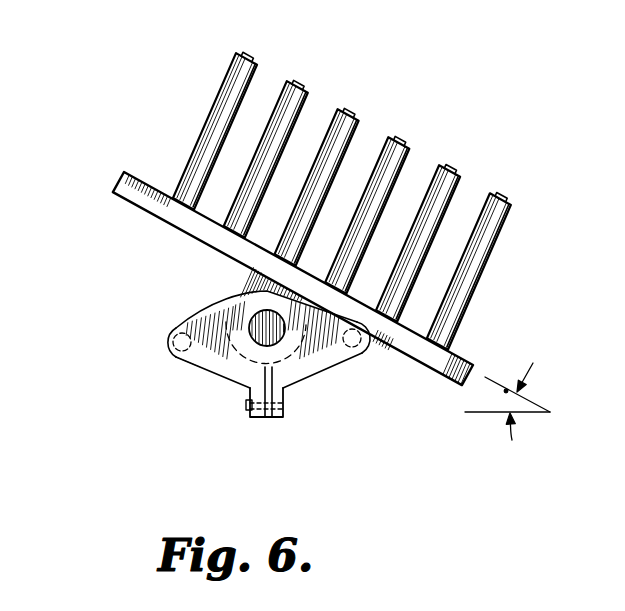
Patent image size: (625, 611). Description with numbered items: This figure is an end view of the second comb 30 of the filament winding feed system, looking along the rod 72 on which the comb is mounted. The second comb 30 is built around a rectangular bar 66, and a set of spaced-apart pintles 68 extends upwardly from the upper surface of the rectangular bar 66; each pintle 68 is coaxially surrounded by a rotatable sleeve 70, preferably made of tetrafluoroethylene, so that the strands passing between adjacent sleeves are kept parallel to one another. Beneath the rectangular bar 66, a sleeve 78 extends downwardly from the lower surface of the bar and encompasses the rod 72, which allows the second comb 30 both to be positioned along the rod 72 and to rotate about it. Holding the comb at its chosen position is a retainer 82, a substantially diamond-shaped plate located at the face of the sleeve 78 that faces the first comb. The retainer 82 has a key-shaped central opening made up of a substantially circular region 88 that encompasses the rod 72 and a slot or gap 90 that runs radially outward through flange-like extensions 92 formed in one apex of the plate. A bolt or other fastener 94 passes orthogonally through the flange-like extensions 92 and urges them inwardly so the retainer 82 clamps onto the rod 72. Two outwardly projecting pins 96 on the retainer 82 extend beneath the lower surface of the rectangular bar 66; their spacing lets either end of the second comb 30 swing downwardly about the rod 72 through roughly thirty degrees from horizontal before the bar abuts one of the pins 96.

The second comb 30 is at (161, 242).
The rectangular bar 66 is at (447, 355).
The pintles 68 is at (350, 112).
The rotatable sleeve 70 is at (230, 128).
The rod 72 is at (264, 342).
The sleeve 78 is at (250, 290).
The retainer 82 is at (178, 367).
The circular region 88 is at (249, 334).
The slot or gap 90 is at (283, 390).
The flange-like extensions 92 is at (272, 418).
The fastener 94 is at (250, 411).
The pins 96 is at (178, 327).